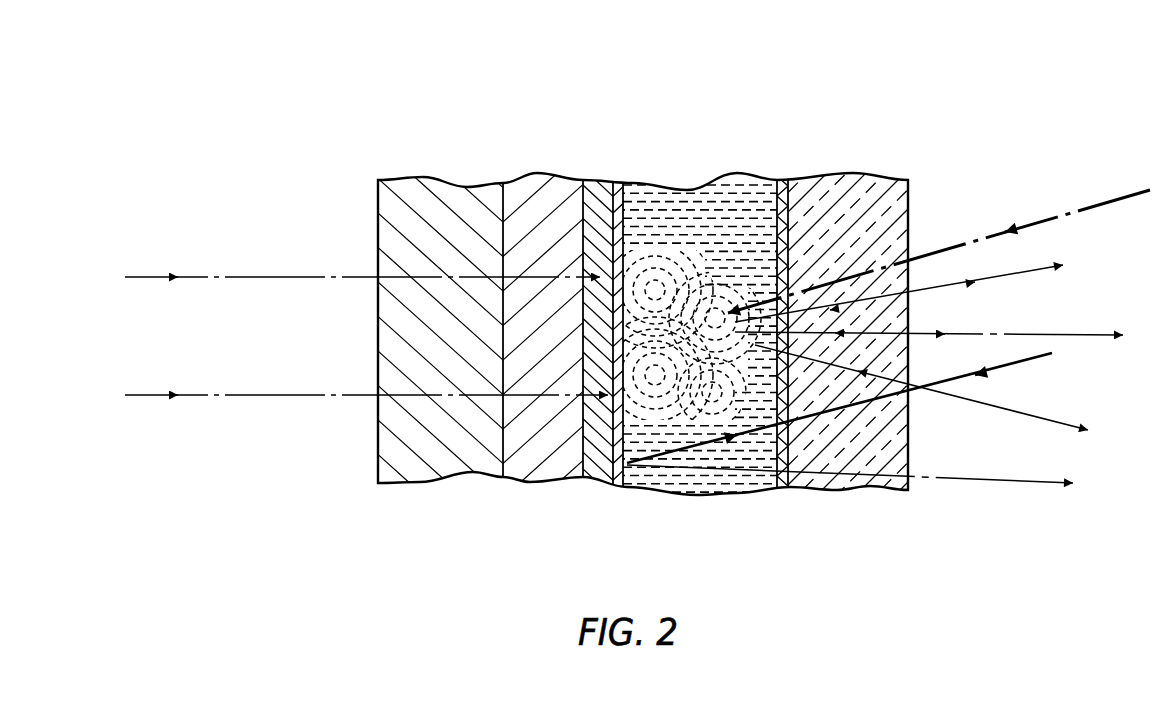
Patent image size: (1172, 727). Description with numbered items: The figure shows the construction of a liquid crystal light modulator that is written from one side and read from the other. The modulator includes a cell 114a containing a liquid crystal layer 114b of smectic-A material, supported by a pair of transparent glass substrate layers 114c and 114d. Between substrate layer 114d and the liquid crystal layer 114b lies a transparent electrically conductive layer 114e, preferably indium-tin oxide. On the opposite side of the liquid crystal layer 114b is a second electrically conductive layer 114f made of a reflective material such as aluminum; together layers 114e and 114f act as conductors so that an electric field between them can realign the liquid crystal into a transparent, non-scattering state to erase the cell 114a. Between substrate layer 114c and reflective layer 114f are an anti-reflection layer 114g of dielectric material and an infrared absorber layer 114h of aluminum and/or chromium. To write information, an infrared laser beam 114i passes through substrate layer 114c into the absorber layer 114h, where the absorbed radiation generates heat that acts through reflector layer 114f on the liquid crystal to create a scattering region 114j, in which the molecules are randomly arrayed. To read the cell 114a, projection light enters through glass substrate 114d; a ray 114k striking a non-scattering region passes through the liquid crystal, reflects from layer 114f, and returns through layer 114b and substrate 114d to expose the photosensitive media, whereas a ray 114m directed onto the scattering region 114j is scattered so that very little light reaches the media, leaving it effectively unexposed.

The cell 114a is at (771, 120).
The liquid crystal layer 114b is at (732, 479).
The transparent substrate layer 114c is at (378, 212).
The transparent substrate layer 114d is at (858, 182).
The transparent electrically conductive layer 114e is at (782, 484).
The second electrically conductive layer 114f is at (617, 182).
The anti-reflection layer 114g is at (527, 481).
The infrared absorber layer 114h is at (597, 480).
The beam 114i is at (278, 360).
The scattering region 114j is at (670, 287).
The ray 114k is at (963, 481).
The ray 114m is at (1040, 225).